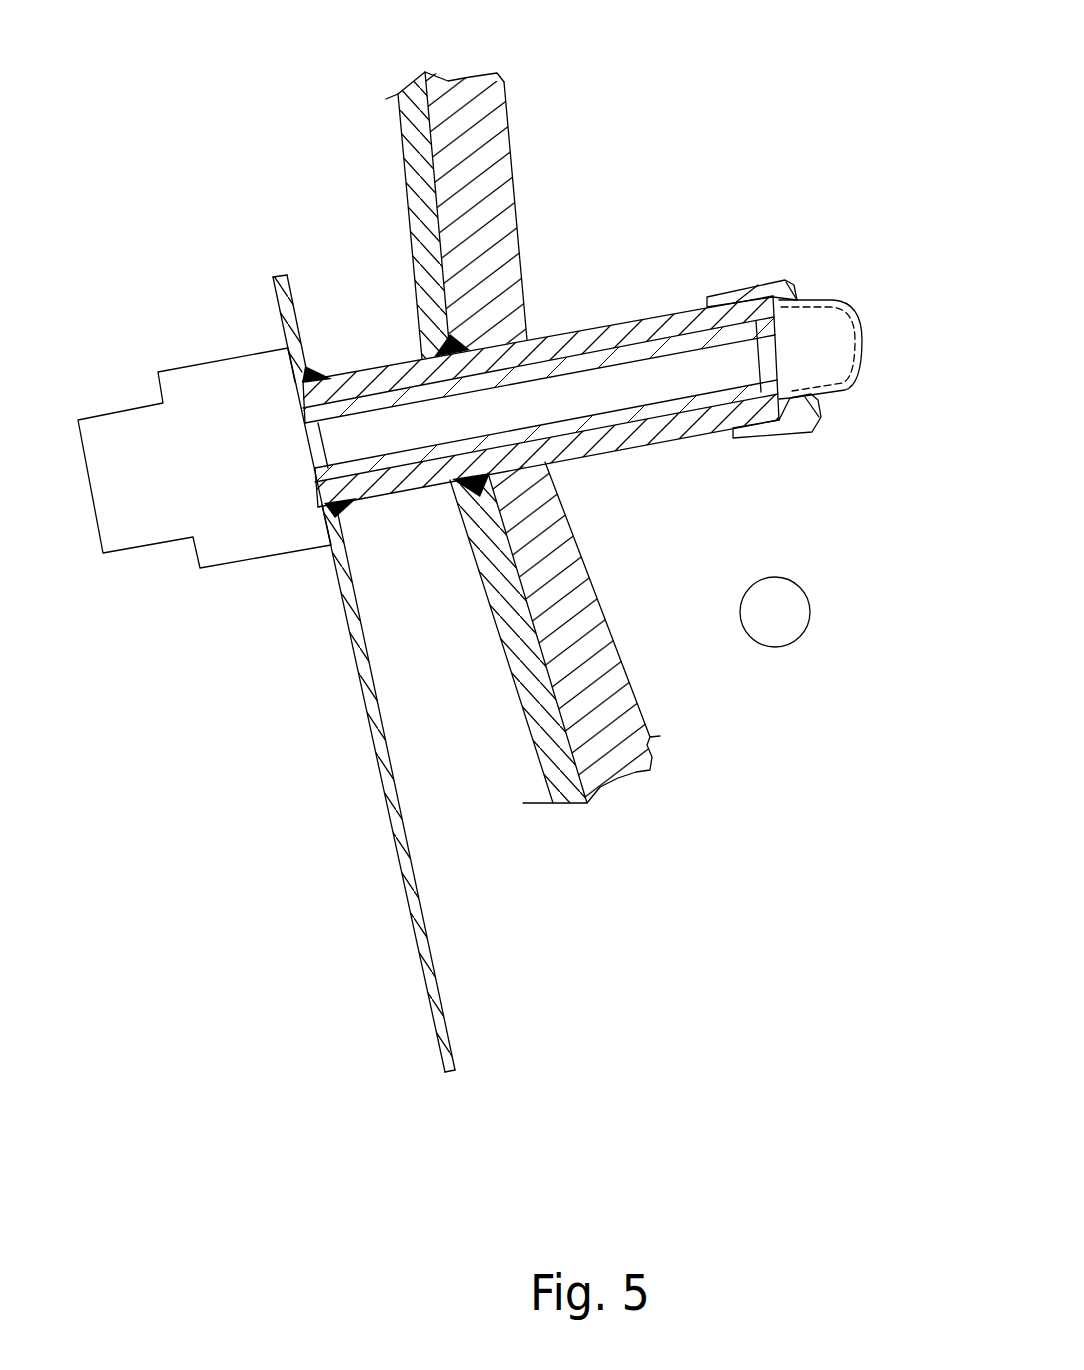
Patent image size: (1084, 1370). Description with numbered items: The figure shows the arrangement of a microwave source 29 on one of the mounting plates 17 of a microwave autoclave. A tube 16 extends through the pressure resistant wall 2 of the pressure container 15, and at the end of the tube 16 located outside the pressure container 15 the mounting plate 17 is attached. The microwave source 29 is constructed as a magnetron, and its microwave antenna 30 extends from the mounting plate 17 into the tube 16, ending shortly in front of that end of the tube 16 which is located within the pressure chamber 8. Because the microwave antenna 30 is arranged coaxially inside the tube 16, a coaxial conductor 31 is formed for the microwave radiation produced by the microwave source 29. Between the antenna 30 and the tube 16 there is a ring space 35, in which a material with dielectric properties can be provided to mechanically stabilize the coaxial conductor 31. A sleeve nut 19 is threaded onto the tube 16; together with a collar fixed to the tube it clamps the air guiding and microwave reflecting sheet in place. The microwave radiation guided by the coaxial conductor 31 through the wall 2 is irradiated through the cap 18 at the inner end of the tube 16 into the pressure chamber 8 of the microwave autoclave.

The pressure resistant wall 2 is at (477, 158).
The pressure chamber 8 is at (775, 612).
The pressure container 15 is at (382, 145).
The tube 16 is at (630, 472).
The mounting plate 17 is at (353, 662).
The cap 18 is at (831, 282).
The sleeve nut 19 is at (744, 225).
The microwave source 29 is at (237, 410).
The microwave antenna 30 is at (427, 437).
The coaxial conductor 31 is at (612, 305).
The ring space 35 is at (547, 337).